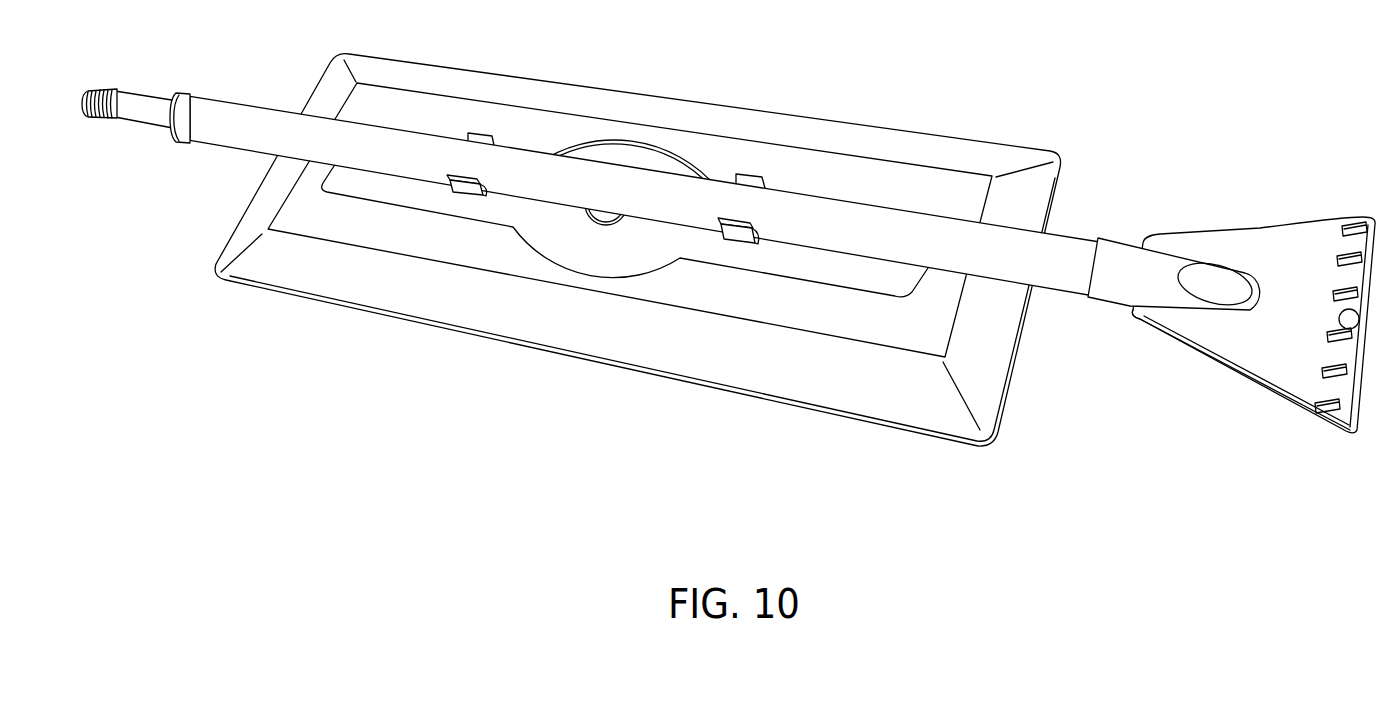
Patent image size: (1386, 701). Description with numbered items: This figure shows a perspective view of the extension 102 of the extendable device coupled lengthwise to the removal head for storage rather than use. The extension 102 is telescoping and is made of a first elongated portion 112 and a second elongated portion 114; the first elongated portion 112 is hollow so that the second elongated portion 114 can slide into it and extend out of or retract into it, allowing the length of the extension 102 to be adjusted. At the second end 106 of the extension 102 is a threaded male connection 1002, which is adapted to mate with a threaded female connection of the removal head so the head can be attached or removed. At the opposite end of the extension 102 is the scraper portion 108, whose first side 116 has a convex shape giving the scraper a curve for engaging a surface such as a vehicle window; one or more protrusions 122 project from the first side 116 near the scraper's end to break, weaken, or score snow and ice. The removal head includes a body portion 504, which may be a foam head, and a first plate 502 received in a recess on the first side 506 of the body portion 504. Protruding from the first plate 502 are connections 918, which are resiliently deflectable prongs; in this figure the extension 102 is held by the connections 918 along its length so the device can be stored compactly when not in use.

The extension 102 is at (722, 231).
The second end 106 is at (580, 163).
The scraper portion 108 is at (1236, 300).
The first elongated portion 112 is at (211, 131).
The second elongated portion 114 is at (135, 113).
The first side 116 is at (1243, 350).
The protrusions 122 is at (1357, 222).
The first plate 502 is at (835, 272).
The body portion 504 is at (651, 250).
The first side 506 is at (857, 177).
The connections 918 is at (750, 173).
The threaded male connection 1002 is at (98, 90).